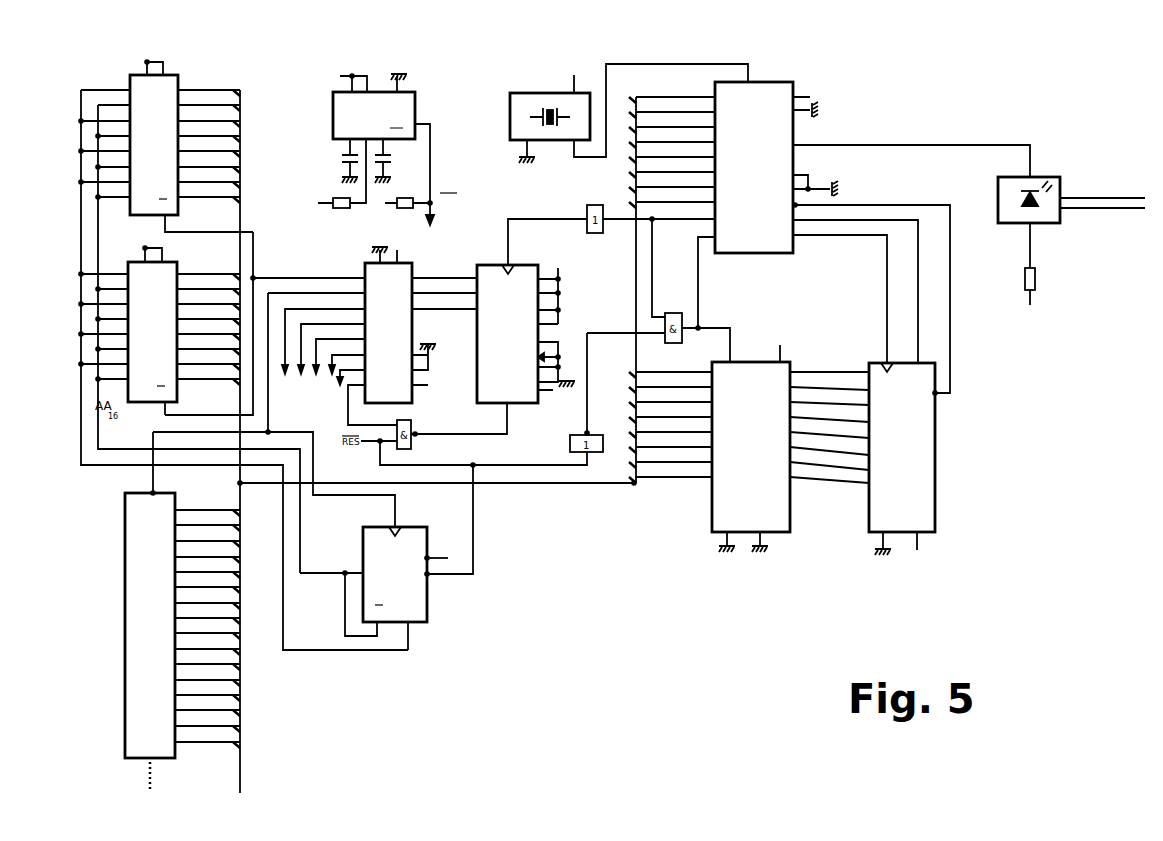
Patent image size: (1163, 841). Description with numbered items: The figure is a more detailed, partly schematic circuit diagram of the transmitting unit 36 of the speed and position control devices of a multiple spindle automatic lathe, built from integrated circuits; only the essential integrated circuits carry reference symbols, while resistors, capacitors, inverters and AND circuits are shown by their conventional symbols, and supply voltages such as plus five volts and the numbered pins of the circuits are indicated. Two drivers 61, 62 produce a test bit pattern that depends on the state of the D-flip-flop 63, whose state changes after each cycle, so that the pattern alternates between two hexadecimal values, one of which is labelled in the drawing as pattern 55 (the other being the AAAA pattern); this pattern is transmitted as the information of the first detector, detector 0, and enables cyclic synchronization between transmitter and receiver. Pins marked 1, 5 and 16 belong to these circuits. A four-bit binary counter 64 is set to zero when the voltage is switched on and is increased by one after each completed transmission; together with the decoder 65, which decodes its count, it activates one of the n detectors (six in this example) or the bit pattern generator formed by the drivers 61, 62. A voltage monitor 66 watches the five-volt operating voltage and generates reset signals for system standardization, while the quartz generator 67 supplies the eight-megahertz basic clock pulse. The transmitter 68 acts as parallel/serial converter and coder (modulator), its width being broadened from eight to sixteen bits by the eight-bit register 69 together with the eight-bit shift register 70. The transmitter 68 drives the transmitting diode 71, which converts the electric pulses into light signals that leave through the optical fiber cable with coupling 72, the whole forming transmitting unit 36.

The detector 0 is at (59, 252).
The computer data bus (16 bit) 1 is at (166, 624).
The computer connection 5 is at (137, 784).
The data line 16 is at (575, 484).
The transmitting unit 36 is at (715, 659).
The control line 55 is at (80, 406).
The driver 61 is at (136, 213).
The driver 62 is at (131, 403).
The D-flip-flop 63 is at (363, 548).
The 4-bit binary counter 64 is at (477, 347).
The decoder 65 is at (414, 324).
The voltage monitor 66 is at (333, 118).
The quartz generator 67 is at (510, 117).
The transmitter 68 is at (784, 254).
The 8-bit register 69 is at (757, 362).
The 8-bit shift register 70 is at (869, 362).
The transmitting diode 71 is at (998, 190).
The optical fiber cable with coupling 72 is at (1123, 198).